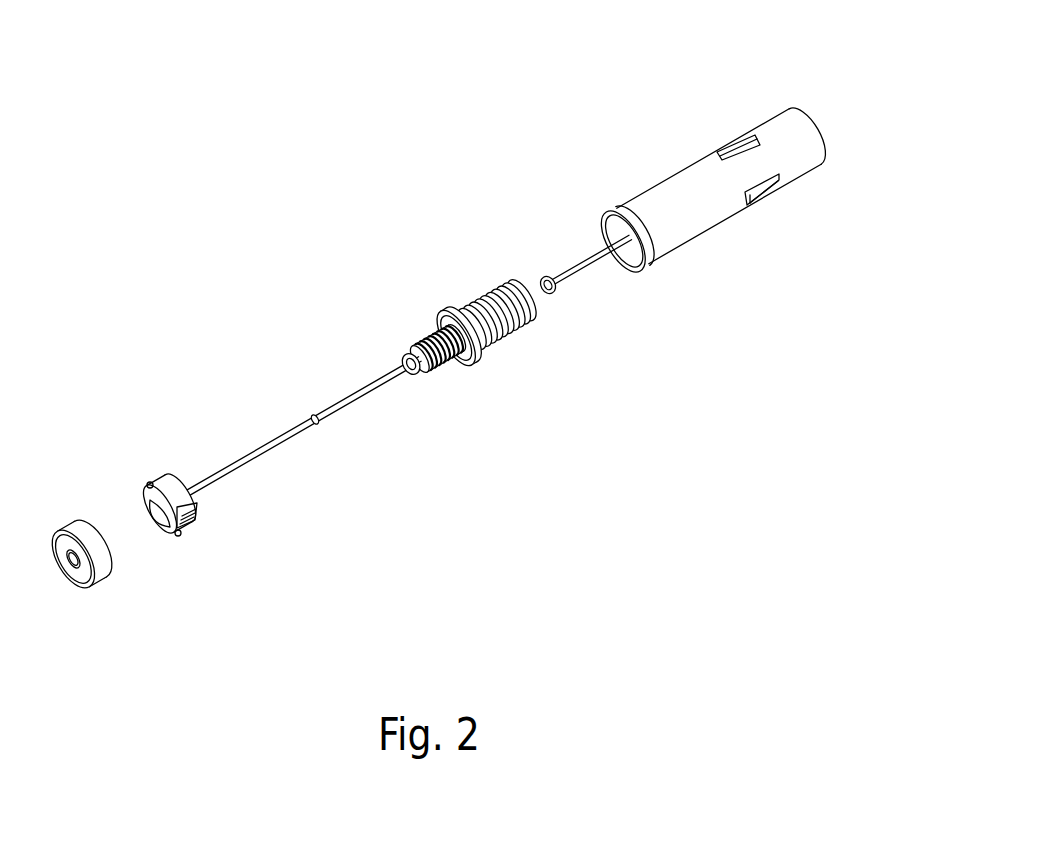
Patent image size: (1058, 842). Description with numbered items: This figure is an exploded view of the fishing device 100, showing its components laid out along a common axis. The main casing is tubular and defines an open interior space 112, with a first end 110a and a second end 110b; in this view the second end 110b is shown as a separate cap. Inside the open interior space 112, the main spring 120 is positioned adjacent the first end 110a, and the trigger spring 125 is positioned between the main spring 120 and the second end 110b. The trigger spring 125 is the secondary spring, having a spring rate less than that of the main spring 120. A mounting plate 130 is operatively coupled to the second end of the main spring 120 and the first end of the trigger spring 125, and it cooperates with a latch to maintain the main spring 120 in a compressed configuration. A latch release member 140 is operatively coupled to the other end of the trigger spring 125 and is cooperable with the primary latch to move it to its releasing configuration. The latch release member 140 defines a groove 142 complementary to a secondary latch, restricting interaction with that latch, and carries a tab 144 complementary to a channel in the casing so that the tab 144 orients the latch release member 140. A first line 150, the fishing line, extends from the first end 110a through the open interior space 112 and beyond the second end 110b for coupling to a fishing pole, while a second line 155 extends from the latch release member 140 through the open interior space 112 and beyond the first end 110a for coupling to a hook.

The fishing device 100 is at (462, 346).
The first end 110a is at (745, 217).
The second end 110b is at (85, 590).
The open interior space 112 is at (613, 294).
The main spring 120 is at (466, 278).
The trigger spring 125 is at (408, 309).
The mounting plate 130 is at (447, 399).
The latch release member 140 is at (198, 528).
The groove 142 is at (197, 507).
The tab 144 is at (177, 538).
The first line 150 is at (568, 268).
The second line 155 is at (297, 425).